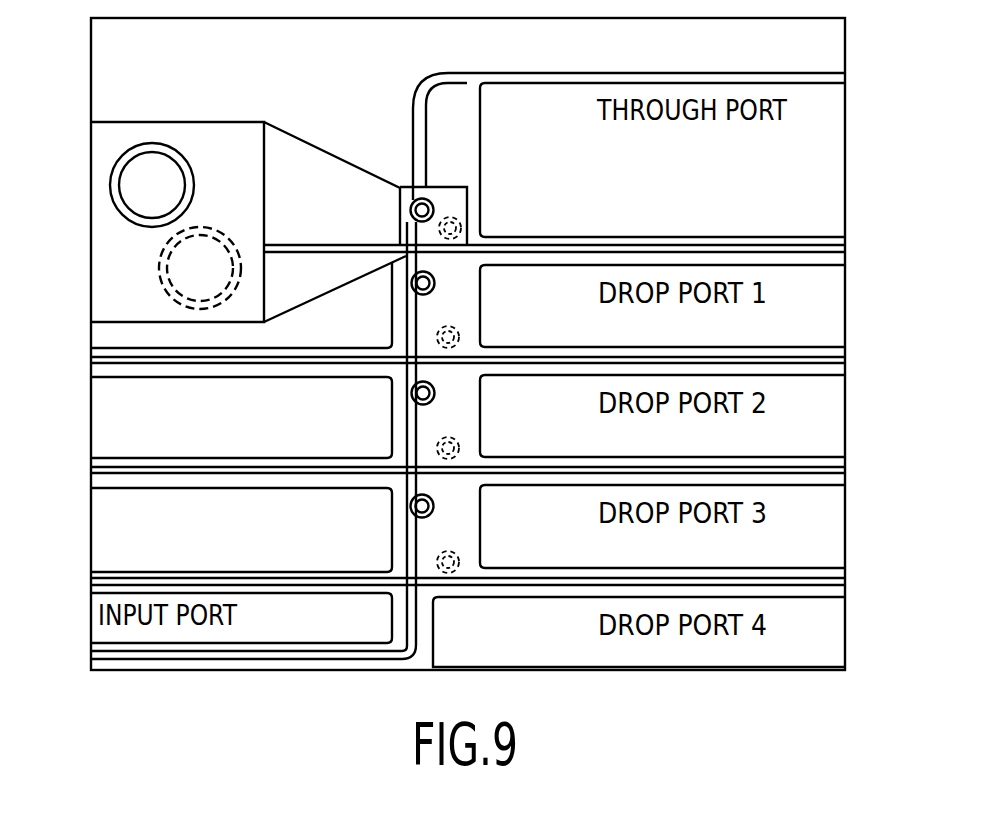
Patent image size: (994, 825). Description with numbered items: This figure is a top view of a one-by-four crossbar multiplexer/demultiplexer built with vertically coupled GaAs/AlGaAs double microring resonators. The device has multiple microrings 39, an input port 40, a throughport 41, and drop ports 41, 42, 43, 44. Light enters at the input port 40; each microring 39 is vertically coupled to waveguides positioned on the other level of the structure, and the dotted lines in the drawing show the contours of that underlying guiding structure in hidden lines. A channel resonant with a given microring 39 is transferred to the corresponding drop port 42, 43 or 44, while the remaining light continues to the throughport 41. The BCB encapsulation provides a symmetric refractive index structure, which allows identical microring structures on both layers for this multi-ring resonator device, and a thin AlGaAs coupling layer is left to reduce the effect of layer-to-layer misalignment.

The microrings 39 is at (434, 204).
The input port 40 is at (845, 76).
The throughport 41 is at (845, 246).
The drop port 42 is at (845, 357).
The drop port 43 is at (845, 468).
The drop port 44 is at (845, 579).